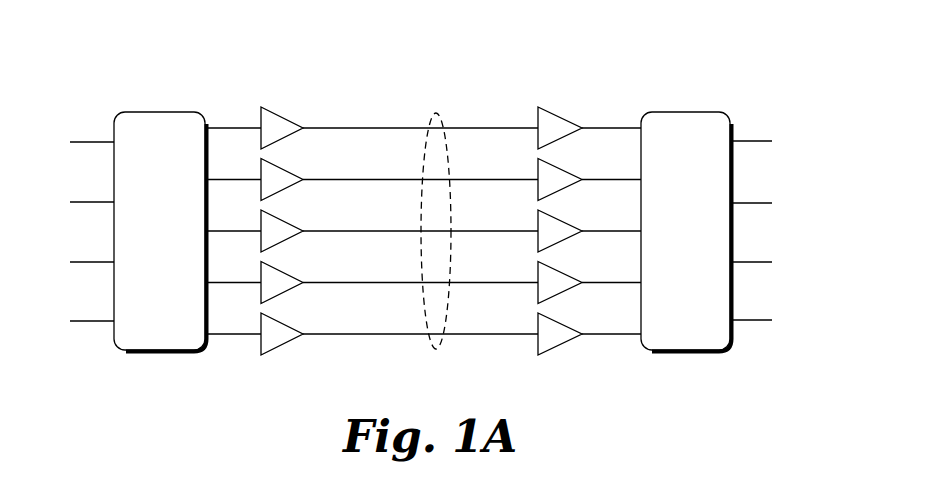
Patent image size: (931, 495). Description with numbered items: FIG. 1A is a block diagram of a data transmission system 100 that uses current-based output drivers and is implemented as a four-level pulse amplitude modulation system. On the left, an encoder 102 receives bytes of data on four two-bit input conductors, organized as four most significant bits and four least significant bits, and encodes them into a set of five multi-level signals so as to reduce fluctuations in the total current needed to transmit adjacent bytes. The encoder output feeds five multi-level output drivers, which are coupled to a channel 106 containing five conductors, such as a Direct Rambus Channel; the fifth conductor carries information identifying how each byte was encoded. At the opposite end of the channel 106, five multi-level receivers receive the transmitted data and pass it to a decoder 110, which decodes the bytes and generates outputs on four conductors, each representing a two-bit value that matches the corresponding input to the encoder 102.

The data transmission system 100 is at (246, 48).
The encoder 102 is at (157, 353).
The channel 106 is at (431, 116).
The decoder 110 is at (686, 353).